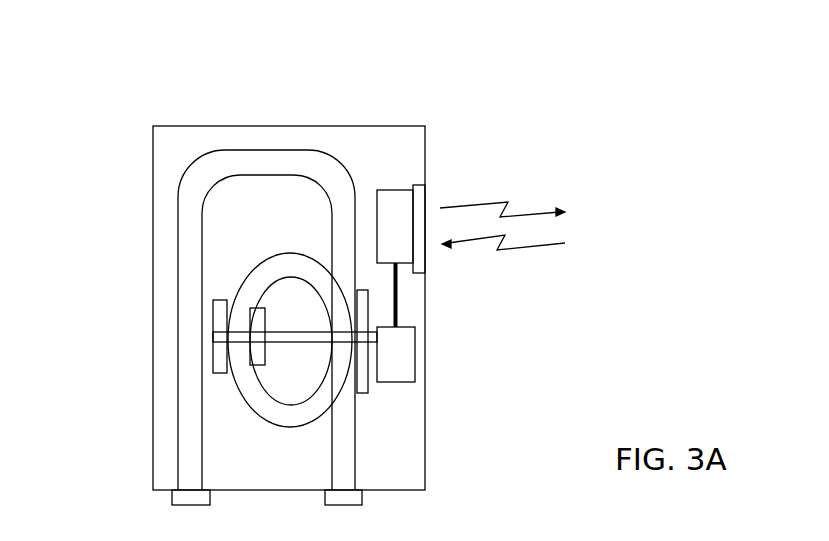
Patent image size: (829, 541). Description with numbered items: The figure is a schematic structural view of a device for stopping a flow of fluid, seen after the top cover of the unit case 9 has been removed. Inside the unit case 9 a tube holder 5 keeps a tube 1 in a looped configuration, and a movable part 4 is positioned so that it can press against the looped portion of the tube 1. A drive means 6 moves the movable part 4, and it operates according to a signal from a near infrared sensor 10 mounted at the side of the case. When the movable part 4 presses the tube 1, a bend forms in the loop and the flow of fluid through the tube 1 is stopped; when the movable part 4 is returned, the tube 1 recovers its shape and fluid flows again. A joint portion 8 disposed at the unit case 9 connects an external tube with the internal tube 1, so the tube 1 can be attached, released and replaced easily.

The tube 1 is at (267, 408).
The movable part 4 is at (218, 320).
The tube holder 5 is at (363, 384).
The drive means 6 is at (402, 367).
The joint portion 8 is at (187, 502).
The unit case 9 is at (153, 186).
The near infrared sensor 10 is at (397, 203).